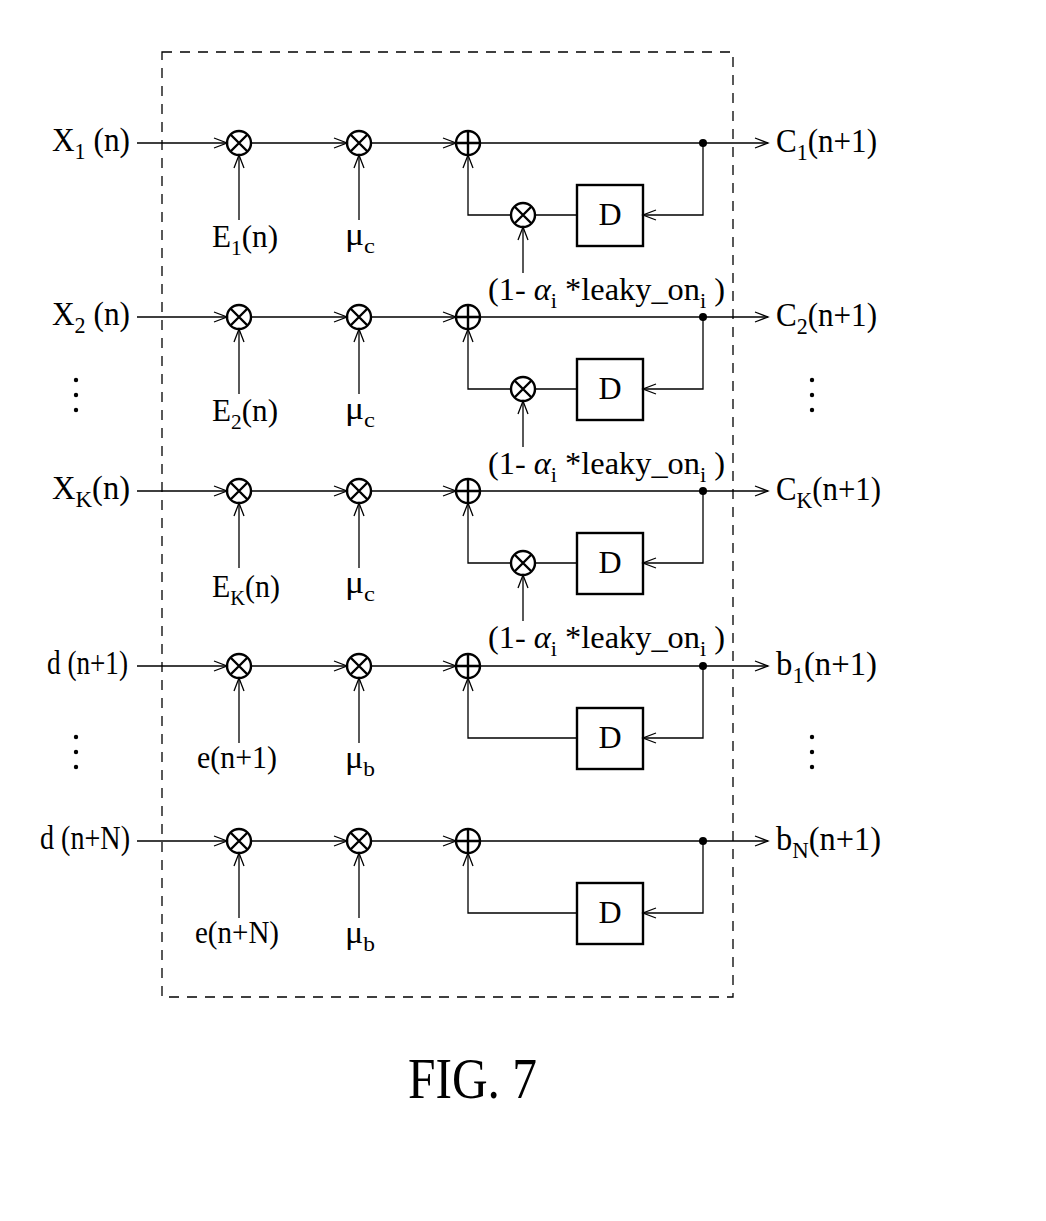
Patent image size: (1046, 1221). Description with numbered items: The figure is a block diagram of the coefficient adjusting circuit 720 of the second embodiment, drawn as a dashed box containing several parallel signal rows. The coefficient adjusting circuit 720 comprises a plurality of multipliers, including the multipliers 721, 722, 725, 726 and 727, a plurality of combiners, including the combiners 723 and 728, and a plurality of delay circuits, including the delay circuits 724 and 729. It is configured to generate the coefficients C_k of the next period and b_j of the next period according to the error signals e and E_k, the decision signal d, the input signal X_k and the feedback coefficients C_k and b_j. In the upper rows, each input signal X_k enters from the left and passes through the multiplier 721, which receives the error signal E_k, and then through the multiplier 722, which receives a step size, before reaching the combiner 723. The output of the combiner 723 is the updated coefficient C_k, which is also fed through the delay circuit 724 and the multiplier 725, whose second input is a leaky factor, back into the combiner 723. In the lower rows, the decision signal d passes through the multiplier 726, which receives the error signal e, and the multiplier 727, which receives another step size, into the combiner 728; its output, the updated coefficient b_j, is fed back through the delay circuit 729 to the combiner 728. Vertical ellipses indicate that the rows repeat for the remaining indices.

The coefficient adjusting circuit 720 is at (382, 52).
The multiplier 721 is at (232, 155).
The multiplier 722 is at (352, 155).
The combiner 723 is at (461, 155).
The delay circuit 724 is at (610, 185).
The multiplier 725 is at (516, 205).
The multiplier 726 is at (232, 678).
The multiplier 727 is at (352, 678).
The combiner 728 is at (461, 678).
The delay circuit 729 is at (610, 708).